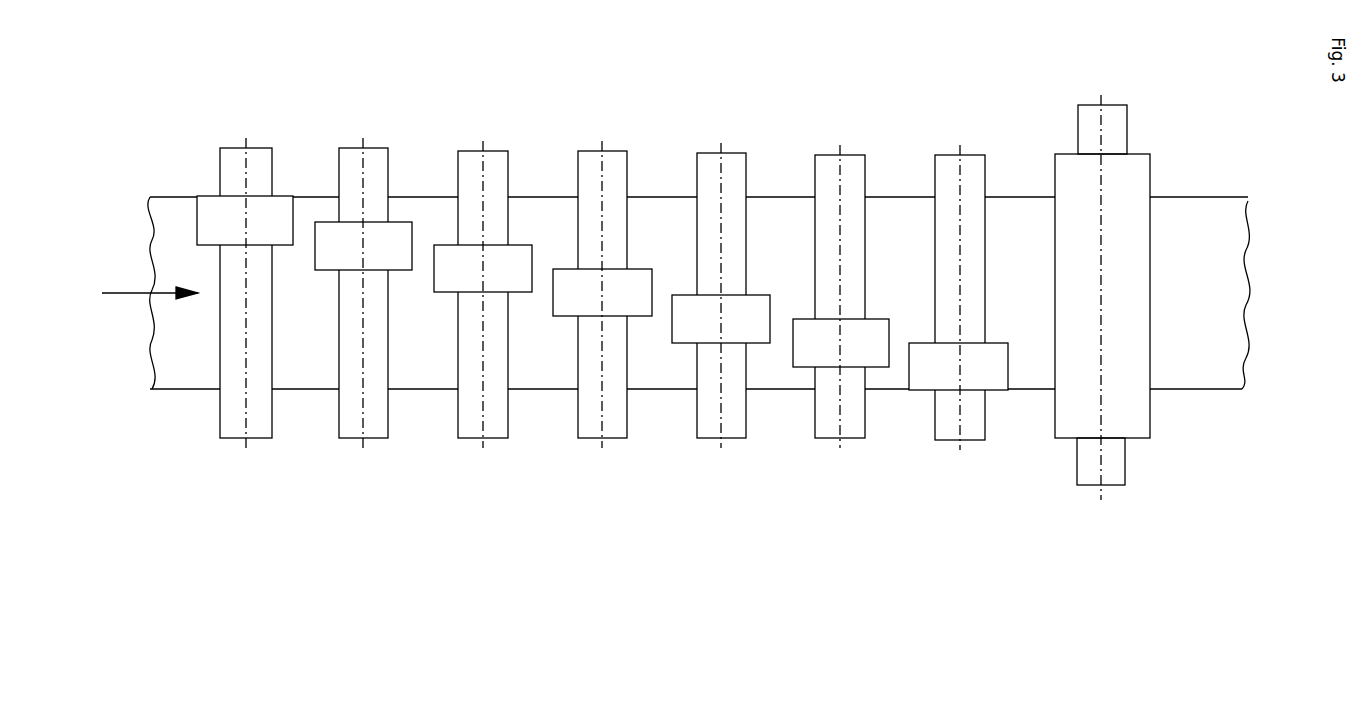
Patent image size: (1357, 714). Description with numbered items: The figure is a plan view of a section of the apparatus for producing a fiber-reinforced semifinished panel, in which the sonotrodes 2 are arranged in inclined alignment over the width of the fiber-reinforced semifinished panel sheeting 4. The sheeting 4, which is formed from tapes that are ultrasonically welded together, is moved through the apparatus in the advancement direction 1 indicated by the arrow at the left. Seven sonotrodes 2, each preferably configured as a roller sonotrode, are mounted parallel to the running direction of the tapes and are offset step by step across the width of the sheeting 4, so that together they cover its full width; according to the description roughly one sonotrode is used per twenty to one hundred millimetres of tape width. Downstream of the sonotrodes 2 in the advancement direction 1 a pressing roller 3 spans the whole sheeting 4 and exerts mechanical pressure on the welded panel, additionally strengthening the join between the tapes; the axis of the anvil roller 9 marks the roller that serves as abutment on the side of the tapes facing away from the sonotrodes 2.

The advancement direction 1 is at (127, 293).
The sonotrode 2 is at (927, 353).
The pressing roller 3 is at (1077, 412).
The fiber-reinforced semifinished panel sheeting 4 is at (1207, 390).
The axis of the anvil roller 9 is at (1113, 473).